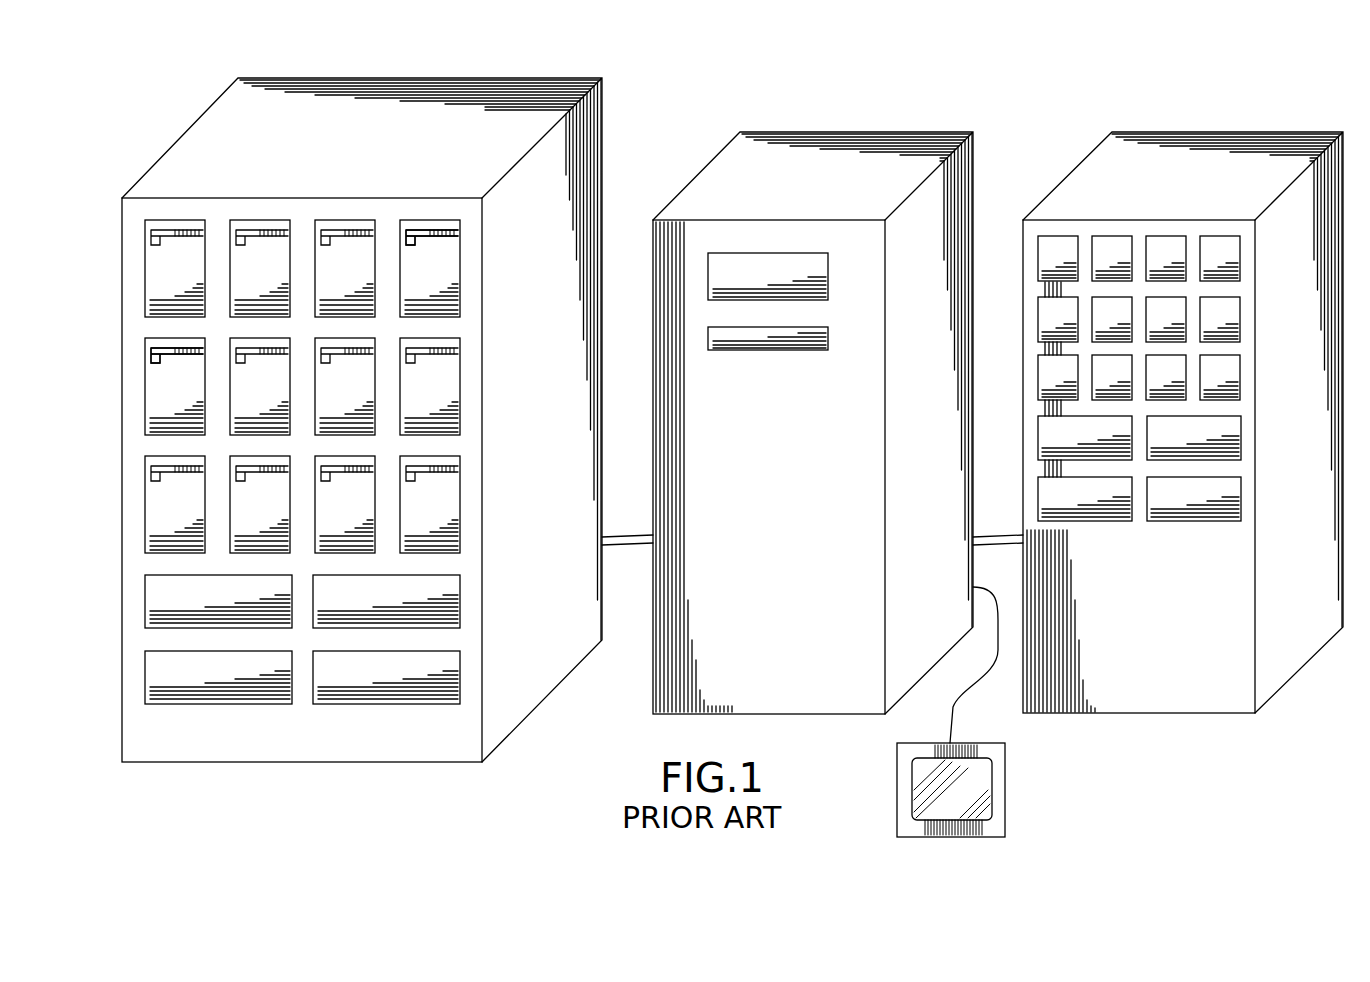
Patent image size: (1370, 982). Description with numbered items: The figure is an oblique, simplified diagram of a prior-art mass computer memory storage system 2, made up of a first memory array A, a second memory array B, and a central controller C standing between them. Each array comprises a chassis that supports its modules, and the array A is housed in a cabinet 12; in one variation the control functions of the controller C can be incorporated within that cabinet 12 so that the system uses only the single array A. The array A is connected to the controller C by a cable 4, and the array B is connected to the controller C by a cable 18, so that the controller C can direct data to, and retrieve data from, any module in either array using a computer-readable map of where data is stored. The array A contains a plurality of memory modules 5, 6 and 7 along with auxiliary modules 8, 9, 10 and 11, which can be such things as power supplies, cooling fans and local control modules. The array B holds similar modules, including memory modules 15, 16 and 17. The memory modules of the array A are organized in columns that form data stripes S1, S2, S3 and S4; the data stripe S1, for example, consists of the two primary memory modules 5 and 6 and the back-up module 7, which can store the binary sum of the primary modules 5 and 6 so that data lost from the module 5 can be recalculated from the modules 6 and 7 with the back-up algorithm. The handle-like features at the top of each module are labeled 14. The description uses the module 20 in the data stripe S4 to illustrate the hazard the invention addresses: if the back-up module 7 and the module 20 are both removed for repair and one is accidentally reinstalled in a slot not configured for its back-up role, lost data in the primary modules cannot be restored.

The system 2 is at (1138, 58).
The first memory array A is at (547, 72).
The second memory array B is at (1292, 126).
The central controller C is at (918, 126).
The data stripe S1 is at (167, 212).
The data stripe S2 is at (252, 212).
The data stripe S3 is at (346, 212).
The data stripe S4 is at (425, 212).
The cable 4 is at (628, 533).
The memory module 5 is at (145, 270).
The memory module 6 is at (145, 418).
The back-up module 7 is at (145, 508).
The auxiliary module 8 is at (145, 603).
The auxiliary module 9 is at (222, 705).
The auxiliary module 10 is at (455, 603).
The auxiliary module 11 is at (376, 705).
The cabinet 12 is at (604, 177).
The module handle 14 is at (433, 240).
The memory module 15 is at (1038, 264).
The memory module 16 is at (1038, 324).
The memory module 17 is at (1038, 384).
The cable 18 is at (1001, 534).
The module 20 is at (1007, 790).